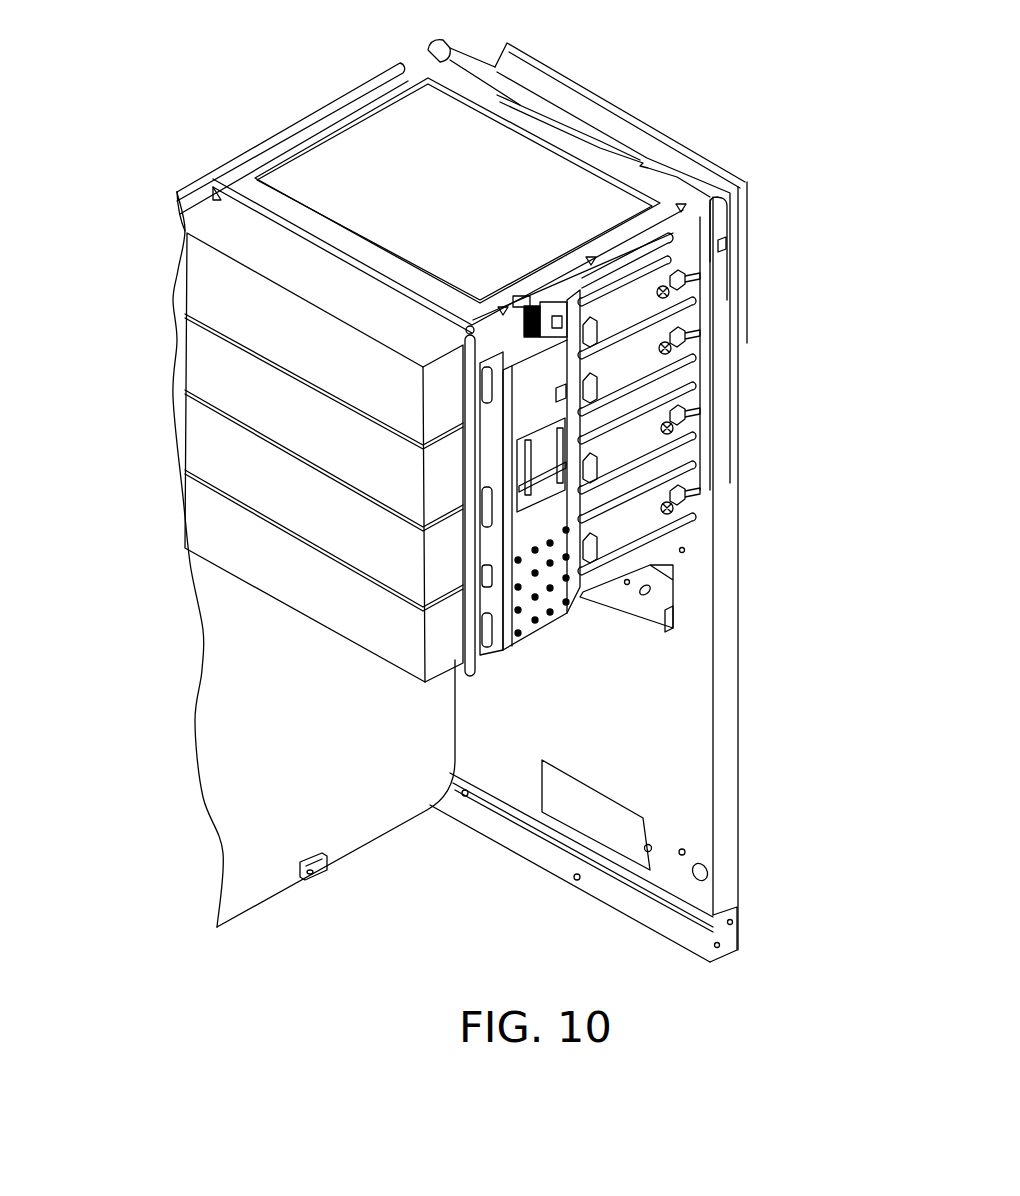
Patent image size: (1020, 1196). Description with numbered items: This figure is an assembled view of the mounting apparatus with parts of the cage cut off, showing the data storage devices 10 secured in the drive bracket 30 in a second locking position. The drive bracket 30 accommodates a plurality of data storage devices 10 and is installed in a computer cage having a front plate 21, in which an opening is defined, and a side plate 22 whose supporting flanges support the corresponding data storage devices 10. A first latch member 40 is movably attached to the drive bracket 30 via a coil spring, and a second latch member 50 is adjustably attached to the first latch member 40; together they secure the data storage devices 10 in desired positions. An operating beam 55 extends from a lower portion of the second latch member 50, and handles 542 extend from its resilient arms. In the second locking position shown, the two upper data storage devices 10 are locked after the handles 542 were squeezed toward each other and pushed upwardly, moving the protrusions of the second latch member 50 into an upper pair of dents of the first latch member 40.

The data storage device 10 is at (237, 247).
The front plate 21 is at (692, 757).
The side plate 22 is at (263, 670).
The drive bracket 30 is at (437, 73).
The first latch member 40 is at (558, 543).
The second latch member 50 is at (677, 323).
The handle 542 is at (563, 393).
The operating beam 55 is at (547, 467).